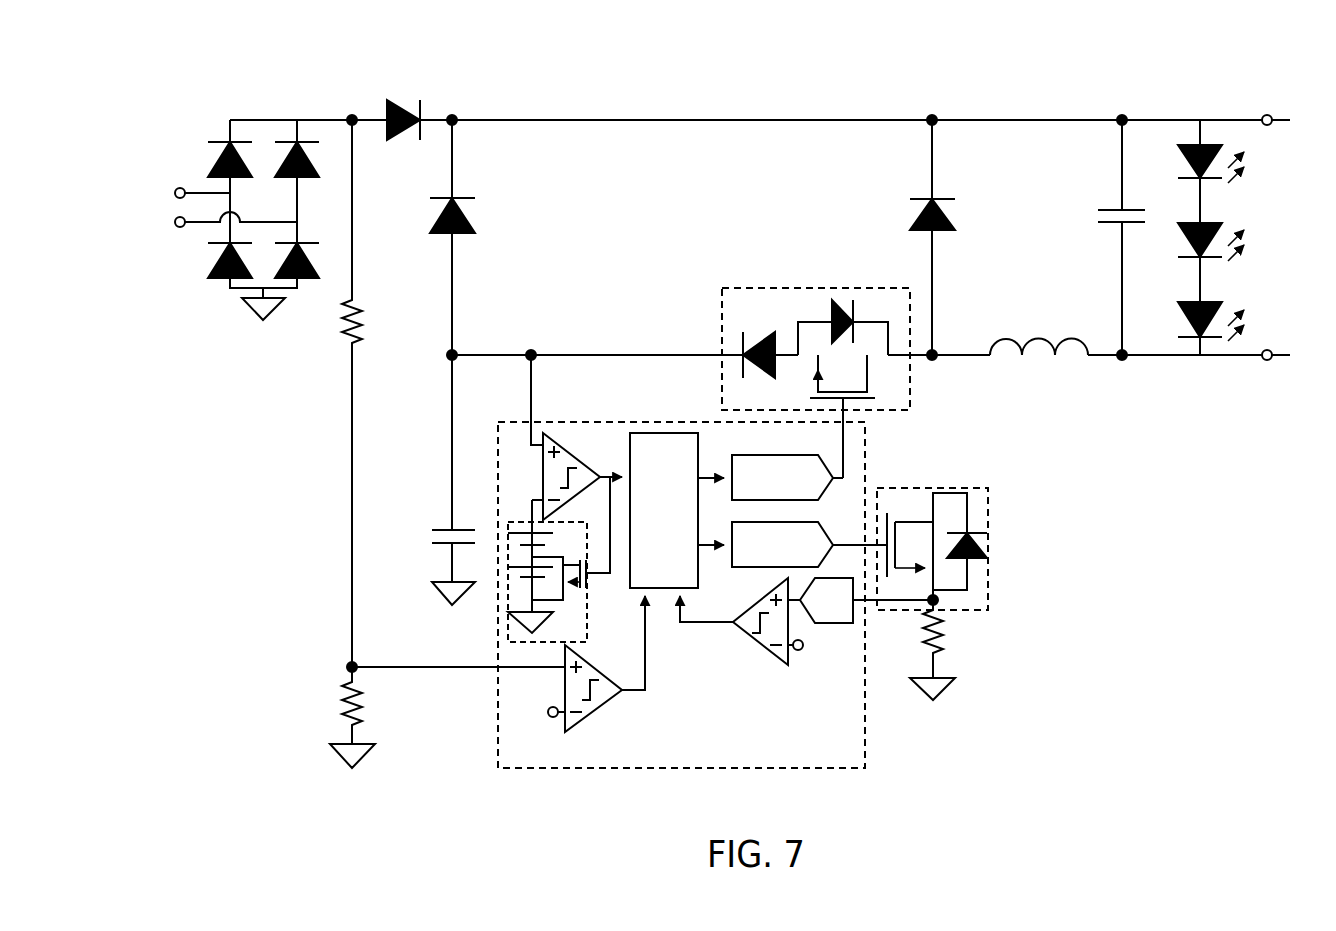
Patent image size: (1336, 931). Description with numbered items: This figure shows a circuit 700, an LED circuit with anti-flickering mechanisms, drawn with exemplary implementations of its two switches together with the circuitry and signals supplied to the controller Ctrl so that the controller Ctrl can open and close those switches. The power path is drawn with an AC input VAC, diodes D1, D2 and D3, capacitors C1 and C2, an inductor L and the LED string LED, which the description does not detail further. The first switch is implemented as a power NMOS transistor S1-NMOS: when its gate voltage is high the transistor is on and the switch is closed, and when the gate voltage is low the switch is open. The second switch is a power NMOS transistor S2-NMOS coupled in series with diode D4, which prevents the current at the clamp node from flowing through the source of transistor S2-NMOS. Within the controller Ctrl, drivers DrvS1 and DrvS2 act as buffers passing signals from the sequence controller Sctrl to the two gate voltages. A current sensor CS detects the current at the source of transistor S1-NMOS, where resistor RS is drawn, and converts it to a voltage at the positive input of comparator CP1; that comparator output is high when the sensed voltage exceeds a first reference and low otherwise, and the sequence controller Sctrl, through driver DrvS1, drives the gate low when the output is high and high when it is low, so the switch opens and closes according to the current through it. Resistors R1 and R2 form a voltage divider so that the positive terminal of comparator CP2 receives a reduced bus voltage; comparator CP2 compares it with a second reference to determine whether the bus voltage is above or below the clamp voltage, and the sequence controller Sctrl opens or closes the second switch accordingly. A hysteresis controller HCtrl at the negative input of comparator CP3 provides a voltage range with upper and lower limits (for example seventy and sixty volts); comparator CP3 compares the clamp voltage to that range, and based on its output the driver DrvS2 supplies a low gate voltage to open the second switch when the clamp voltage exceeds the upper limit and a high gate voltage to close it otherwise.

The circuit 700 is at (1130, 672).
The AC input and bridge rectifier VAC is at (225, 220).
The resistor R1 is at (366, 393).
The resistor R2 is at (360, 715).
The diode D1 is at (948, 237).
The diode D2 is at (467, 237).
The diode D3 is at (403, 107).
The diode D4 is at (732, 343).
The output capacitor C1 is at (1106, 237).
The clamp capacitor C2 is at (439, 480).
The inductor L is at (1039, 334).
The LED string LED is at (1211, 237).
The power NMOS transistor S1-NMOS is at (893, 470).
The power NMOS transistor S2-NMOS is at (800, 367).
The sense resistor RS is at (939, 647).
The controller Ctrl is at (708, 768).
The sequence controller Sctrl is at (664, 510).
The comparator CP1 is at (775, 660).
The comparator CP2 is at (586, 722).
The comparator CP3 is at (540, 470).
The hysteresis controller HCtrl is at (505, 603).
The driver DrvS1 is at (792, 544).
The driver DrvS2 is at (770, 477).
The current sensor CS is at (866, 600).